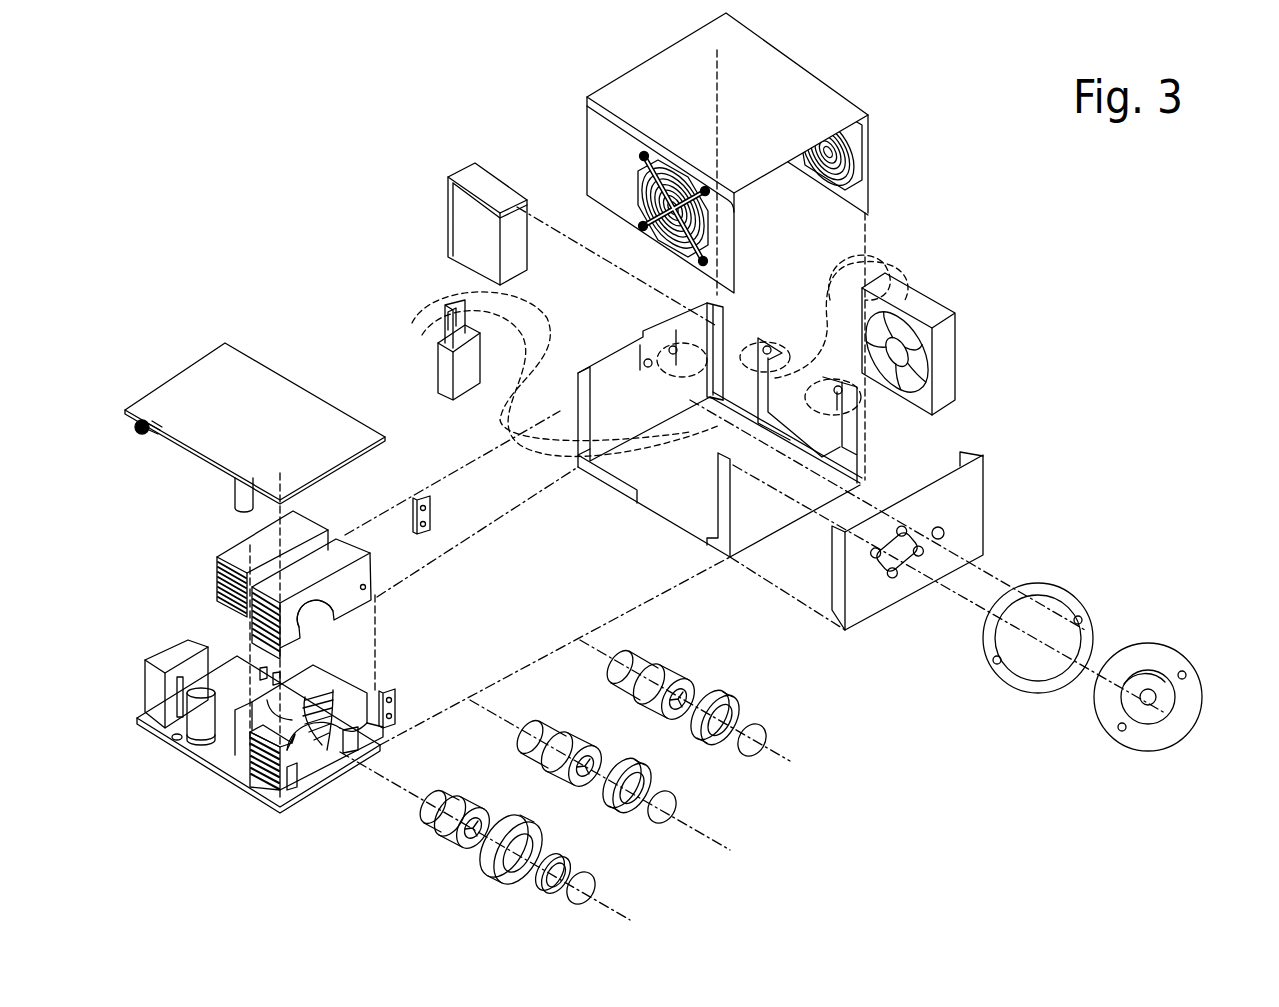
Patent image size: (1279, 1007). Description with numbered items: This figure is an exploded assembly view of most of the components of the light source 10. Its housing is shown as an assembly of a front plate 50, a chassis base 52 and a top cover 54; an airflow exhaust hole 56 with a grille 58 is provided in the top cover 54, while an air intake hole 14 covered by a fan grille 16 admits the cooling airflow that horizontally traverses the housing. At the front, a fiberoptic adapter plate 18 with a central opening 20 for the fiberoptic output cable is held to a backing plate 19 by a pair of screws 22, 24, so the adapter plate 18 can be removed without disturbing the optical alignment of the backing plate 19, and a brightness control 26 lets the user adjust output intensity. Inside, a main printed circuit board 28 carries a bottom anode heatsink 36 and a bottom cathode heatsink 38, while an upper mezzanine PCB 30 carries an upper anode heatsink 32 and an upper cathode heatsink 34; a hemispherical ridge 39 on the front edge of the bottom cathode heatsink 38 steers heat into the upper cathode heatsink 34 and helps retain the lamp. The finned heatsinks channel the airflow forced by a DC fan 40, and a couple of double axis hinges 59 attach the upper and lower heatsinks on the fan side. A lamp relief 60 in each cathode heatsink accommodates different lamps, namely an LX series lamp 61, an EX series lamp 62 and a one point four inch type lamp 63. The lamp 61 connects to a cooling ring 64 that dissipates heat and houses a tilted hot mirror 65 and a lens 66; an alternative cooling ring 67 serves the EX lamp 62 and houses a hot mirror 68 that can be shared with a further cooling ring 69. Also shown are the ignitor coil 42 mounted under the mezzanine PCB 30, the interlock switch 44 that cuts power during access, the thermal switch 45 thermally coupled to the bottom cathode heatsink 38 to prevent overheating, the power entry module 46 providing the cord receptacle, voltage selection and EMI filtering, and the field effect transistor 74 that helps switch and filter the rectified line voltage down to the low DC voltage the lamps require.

The light source 10 is at (930, 188).
The air intake hole 14 is at (850, 166).
The fan grille 16 is at (823, 180).
The fiberoptic adapter plate 18 is at (1203, 700).
The backing plate 19 is at (1072, 596).
The central opening 20 is at (1160, 710).
The screw 22 is at (1187, 673).
The screw 24 is at (1121, 731).
The brightness control 26 is at (946, 532).
The main printed circuit board 28 is at (265, 790).
The upper mezzanine PCB 30 is at (290, 378).
The upper anode heatsink 32 is at (228, 548).
The upper cathode heatsink 34 is at (380, 572).
The bottom anode heatsink 36 is at (243, 748).
The bottom cathode heatsink 38 is at (350, 680).
The hemispherical ridge 39 is at (355, 727).
The fan 40 is at (930, 296).
The ignitor coil 42 is at (143, 436).
The interlock switch 44 is at (455, 398).
The thermal switch 45 is at (348, 755).
The power entry module 46 is at (503, 180).
The front plate 50 is at (972, 487).
The chassis base 52 is at (660, 520).
The top cover 54 is at (797, 62).
The airflow exhaust hole 56 is at (660, 166).
The grille 58 is at (636, 200).
The double axis hinge 59 is at (432, 506).
The lamp relief 60 is at (326, 608).
The LX series lamp 61 is at (483, 801).
The EX series lamp 62 is at (581, 727).
The 1.4 inch type lamp 63 is at (672, 652).
The cooling ring 64 is at (538, 834).
The hot mirror 65 is at (564, 862).
The lens 66 is at (592, 880).
The alternative cooling ring 67 is at (648, 771).
The hot mirror 68 is at (672, 796).
The cooling ring 69 is at (742, 706).
The field effect transistor 74 is at (290, 792).